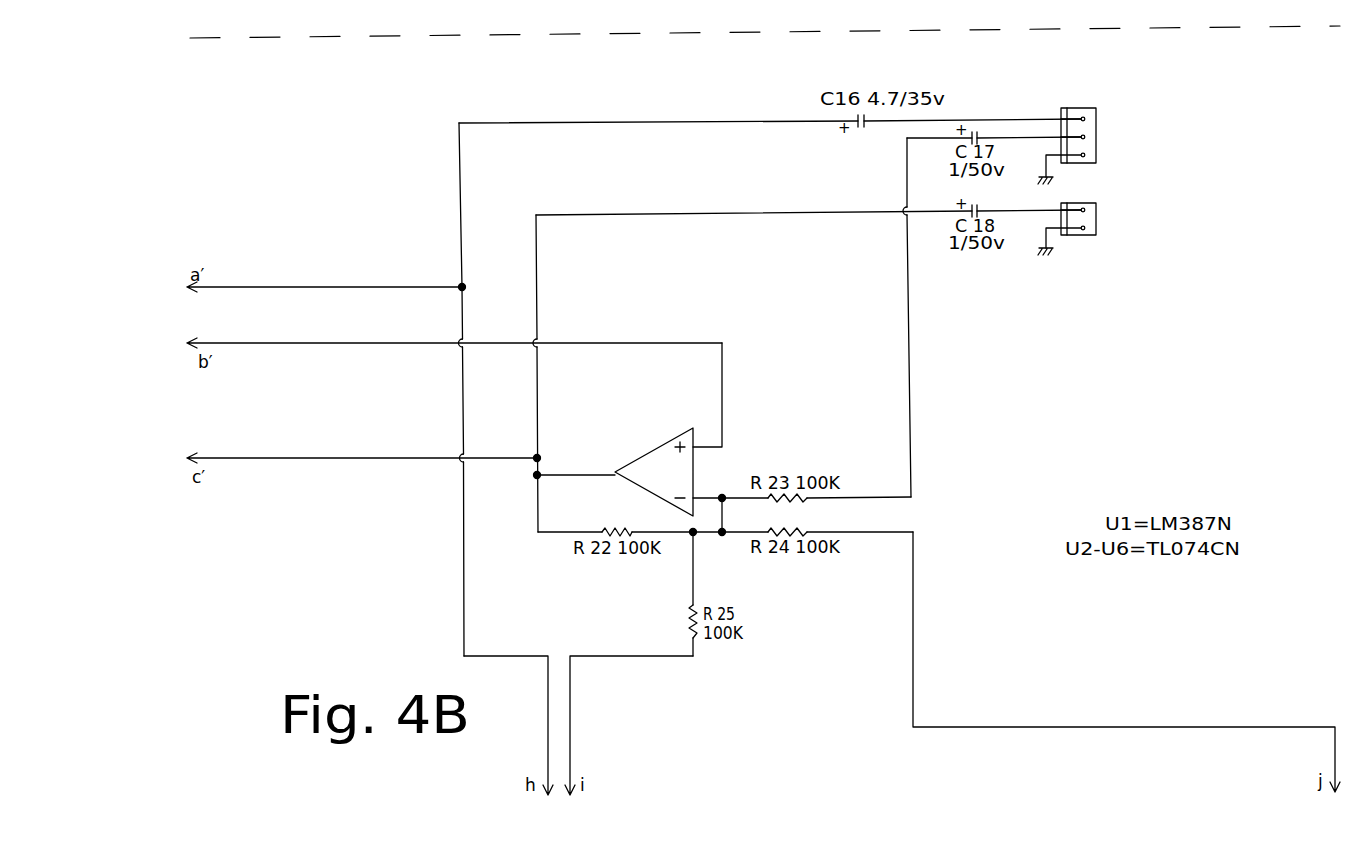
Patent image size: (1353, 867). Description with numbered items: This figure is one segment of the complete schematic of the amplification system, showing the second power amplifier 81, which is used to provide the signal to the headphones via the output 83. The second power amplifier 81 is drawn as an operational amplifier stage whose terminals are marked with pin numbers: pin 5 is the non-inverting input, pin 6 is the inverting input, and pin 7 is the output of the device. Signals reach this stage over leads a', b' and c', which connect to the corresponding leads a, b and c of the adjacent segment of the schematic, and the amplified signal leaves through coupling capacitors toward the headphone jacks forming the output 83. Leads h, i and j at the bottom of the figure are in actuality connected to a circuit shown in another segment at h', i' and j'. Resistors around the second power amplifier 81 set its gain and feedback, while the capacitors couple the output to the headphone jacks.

The power amplifier 81 is at (650, 430).
The output 83 is at (1150, 181).
The op-amp non-inverting input pin 5 is at (707, 395).
The op-amp inverting input pin 6 is at (730, 505).
The op-amp output pin 7 is at (575, 466).